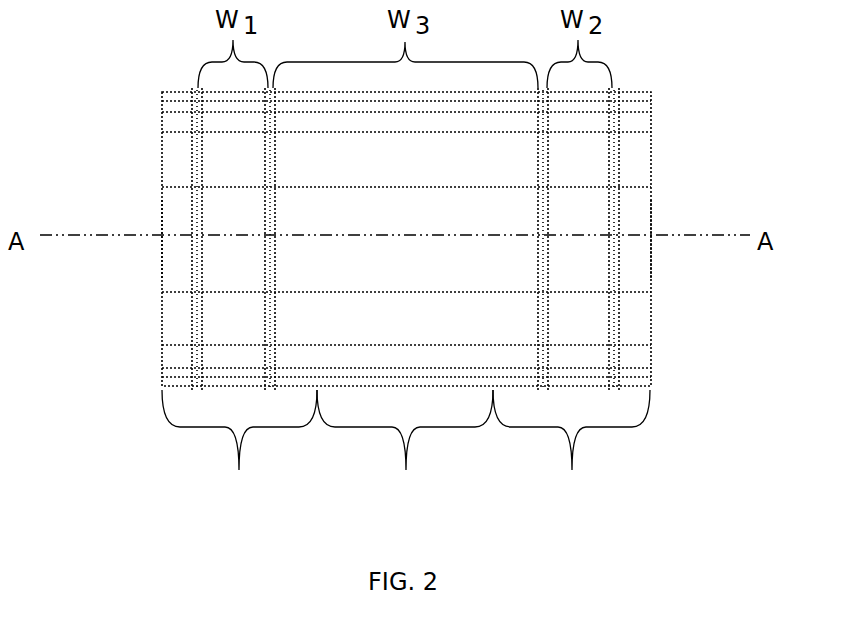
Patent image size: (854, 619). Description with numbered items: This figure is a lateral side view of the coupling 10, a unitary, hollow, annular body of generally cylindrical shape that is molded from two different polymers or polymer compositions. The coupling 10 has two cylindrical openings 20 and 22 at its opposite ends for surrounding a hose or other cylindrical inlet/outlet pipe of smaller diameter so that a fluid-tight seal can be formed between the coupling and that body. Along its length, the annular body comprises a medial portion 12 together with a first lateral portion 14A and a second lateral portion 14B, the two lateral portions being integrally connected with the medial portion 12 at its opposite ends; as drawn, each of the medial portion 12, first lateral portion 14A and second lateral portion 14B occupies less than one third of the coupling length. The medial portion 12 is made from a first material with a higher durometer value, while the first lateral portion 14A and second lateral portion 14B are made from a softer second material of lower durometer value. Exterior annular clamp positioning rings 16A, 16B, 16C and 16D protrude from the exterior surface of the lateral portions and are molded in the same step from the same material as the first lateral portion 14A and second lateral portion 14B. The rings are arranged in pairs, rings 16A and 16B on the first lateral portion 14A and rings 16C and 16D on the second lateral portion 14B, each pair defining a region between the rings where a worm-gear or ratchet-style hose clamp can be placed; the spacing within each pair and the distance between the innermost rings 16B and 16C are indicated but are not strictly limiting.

The coupling 10 is at (700, 58).
The medial portion 12 is at (405, 453).
The first lateral portion 14A is at (239, 453).
The second lateral portion 14B is at (571, 453).
The exterior annular clamp positioning ring 16A is at (195, 212).
The exterior annular clamp positioning ring 16B is at (266, 234).
The exterior annular clamp positioning ring 16C is at (543, 214).
The exterior annular clamp positioning ring 16D is at (616, 215).
The cylindrical opening 20 is at (145, 265).
The cylindrical opening 22 is at (668, 262).